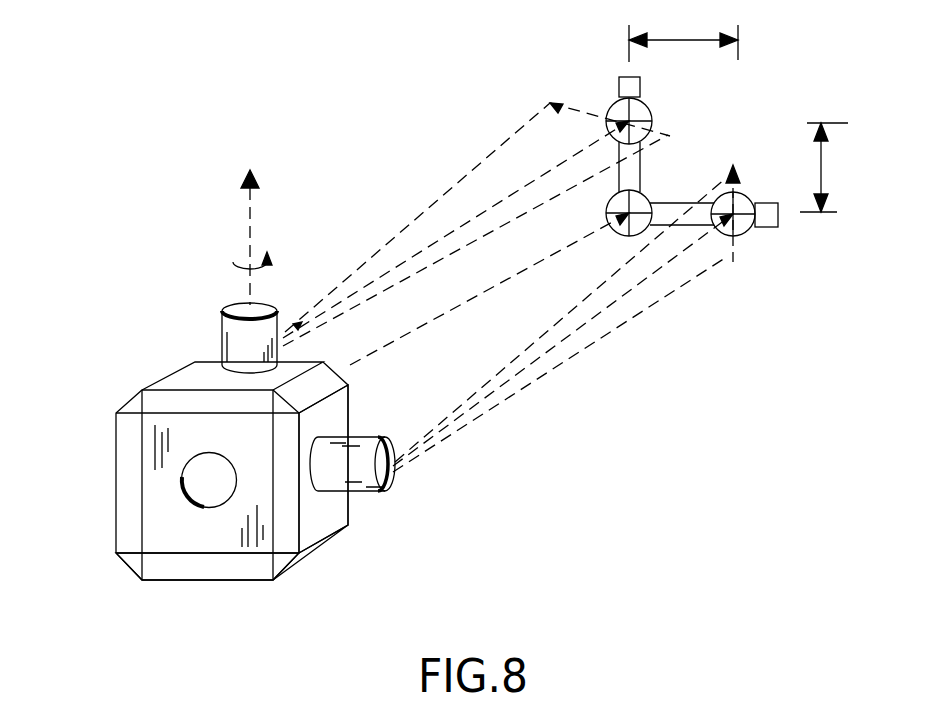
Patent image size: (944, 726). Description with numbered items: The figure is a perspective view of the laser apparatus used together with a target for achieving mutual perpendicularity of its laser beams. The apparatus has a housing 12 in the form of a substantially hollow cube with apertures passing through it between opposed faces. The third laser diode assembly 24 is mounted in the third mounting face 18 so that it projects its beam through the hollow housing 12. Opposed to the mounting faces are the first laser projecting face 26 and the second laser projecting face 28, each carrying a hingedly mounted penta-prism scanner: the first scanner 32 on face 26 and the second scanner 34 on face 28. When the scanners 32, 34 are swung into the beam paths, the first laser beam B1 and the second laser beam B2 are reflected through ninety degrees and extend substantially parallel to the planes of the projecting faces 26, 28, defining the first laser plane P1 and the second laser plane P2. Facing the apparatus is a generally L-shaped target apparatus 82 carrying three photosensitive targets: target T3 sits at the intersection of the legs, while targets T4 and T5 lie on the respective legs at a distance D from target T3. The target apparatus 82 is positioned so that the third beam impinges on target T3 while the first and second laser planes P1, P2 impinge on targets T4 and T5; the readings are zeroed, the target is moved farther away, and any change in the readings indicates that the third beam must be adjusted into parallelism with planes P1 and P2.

The housing 12 is at (116, 502).
The third mounting face 18 is at (160, 567).
The third laser diode assembly 24 is at (216, 493).
The first laser projecting face 26 is at (312, 528).
The second laser projecting face 28 is at (220, 338).
The first scanner 32 is at (367, 497).
The second scanner 34 is at (400, 337).
The L-shaped target apparatus 82 is at (739, 189).
The first laser beam B1 is at (590, 320).
The second laser beam B2 is at (372, 255).
The first laser plane P1 is at (733, 250).
The second laser plane P2 is at (578, 107).
The third photosensitive target T3 is at (653, 190).
The fourth photosensitive target T4 is at (743, 238).
The fifth photosensitive target T5 is at (645, 102).
The distance D is at (742, 107).